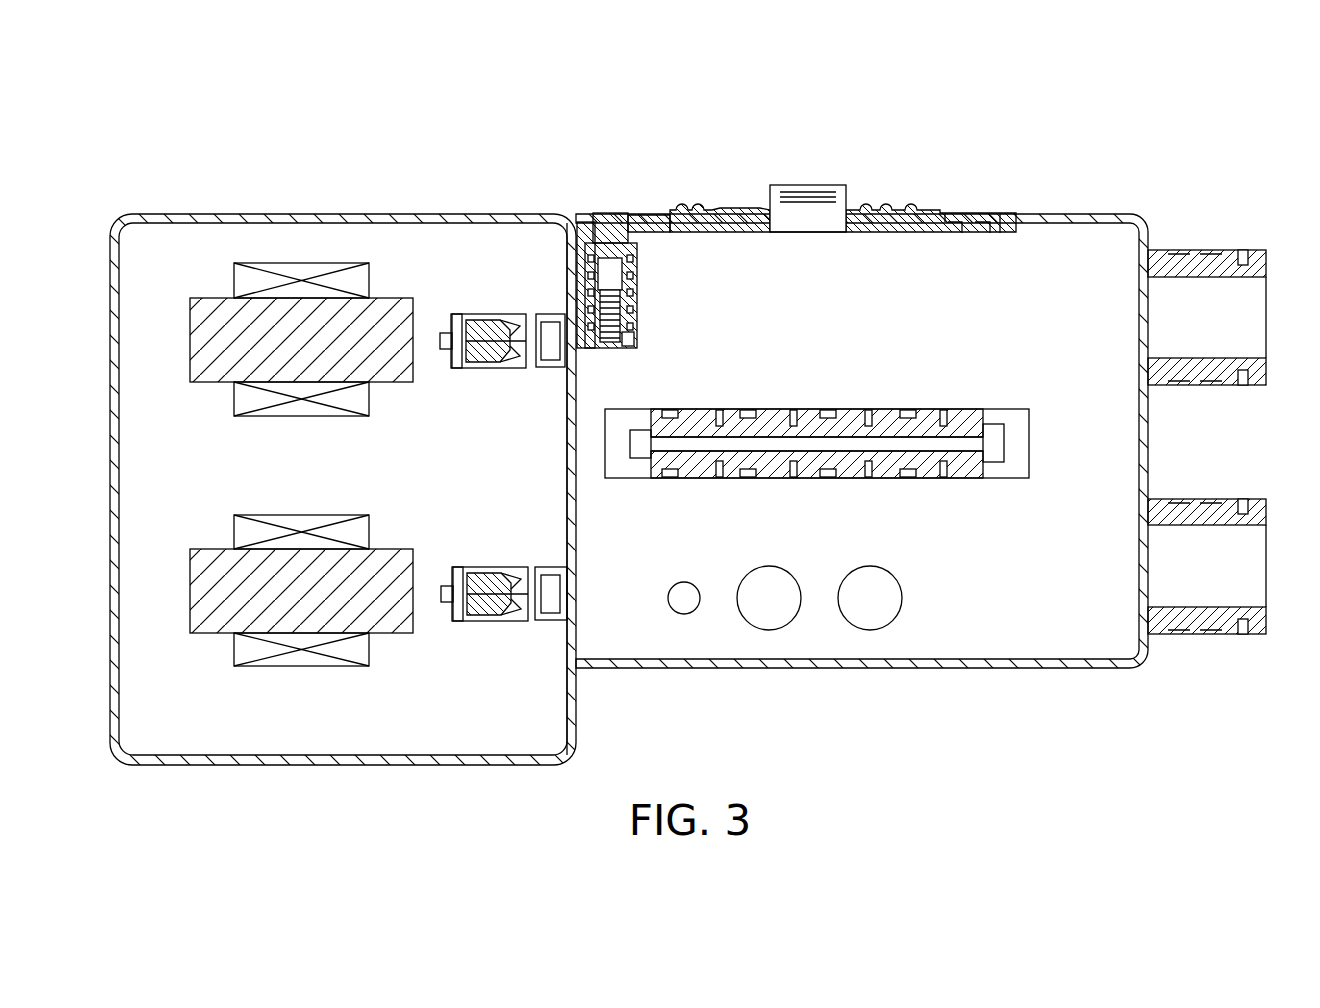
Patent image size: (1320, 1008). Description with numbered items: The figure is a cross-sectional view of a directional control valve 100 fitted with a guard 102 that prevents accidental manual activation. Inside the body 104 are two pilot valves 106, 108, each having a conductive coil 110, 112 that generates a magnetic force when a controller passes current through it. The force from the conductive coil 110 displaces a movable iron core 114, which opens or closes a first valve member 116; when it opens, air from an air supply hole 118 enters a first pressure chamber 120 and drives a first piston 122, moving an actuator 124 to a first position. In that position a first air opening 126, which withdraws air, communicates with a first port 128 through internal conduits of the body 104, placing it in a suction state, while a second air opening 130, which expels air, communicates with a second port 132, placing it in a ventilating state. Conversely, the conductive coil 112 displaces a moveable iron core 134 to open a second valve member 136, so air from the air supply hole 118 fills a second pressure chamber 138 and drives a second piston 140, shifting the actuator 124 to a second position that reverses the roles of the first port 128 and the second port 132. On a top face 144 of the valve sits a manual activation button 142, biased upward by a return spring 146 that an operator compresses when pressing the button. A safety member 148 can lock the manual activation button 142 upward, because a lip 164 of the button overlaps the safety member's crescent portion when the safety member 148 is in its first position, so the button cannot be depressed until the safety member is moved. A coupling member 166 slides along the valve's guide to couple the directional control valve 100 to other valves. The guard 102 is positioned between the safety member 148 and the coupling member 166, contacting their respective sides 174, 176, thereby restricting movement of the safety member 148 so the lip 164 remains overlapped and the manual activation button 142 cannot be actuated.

The directional control valve 100 is at (214, 118).
The guard 102 is at (777, 185).
The body 104 is at (372, 214).
The pilot valve 106 is at (274, 326).
The pilot valve 108 is at (274, 566).
The conductive coil 110 is at (234, 281).
The conductive coil 112 is at (234, 525).
The movable iron core 114 is at (192, 341).
The first valve member 116 is at (482, 318).
The air supply hole 118 is at (684, 598).
The first pressure chamber 120 is at (836, 441).
The first piston 122 is at (995, 433).
The actuator 124 is at (884, 430).
The first air opening 126 is at (870, 598).
The first port 128 is at (1252, 554).
The second air opening 130 is at (769, 598).
The second port 132 is at (1252, 306).
The moveable iron core 134 is at (192, 591).
The second valve member 136 is at (478, 570).
The second pressure chamber 138 is at (619, 424).
The second piston 140 is at (630, 442).
The manual activation button 142 is at (598, 214).
The top face 144 is at (512, 214).
The return spring 146 is at (608, 324).
The safety member 148 is at (703, 210).
The lip 164 is at (625, 213).
The coupling member 166 is at (915, 208).
The side 174 is at (776, 226).
The side 176 is at (846, 228).